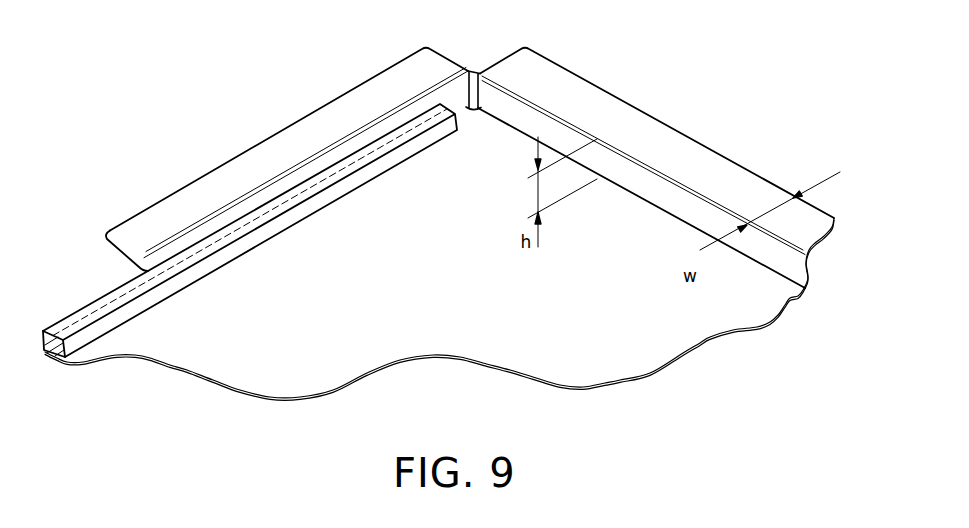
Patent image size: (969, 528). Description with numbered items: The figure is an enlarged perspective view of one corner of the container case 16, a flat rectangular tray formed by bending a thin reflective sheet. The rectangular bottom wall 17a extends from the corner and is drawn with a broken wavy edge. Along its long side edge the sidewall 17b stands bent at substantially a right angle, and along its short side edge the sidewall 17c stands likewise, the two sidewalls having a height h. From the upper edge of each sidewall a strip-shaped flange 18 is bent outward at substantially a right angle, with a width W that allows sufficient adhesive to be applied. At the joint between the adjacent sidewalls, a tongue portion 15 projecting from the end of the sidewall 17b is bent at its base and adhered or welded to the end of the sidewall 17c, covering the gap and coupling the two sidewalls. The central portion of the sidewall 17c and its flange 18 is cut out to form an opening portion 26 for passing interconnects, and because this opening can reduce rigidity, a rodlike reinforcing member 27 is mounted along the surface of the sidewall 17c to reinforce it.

The tongue portion 15 is at (480, 70).
The container case 16 is at (638, 92).
The bottom wall 17a is at (575, 341).
The sidewall on the long side 17b is at (645, 183).
The sidewall on the short side 17c is at (345, 150).
The flange 18 is at (251, 164).
The opening portion 26 is at (112, 268).
The reinforcing member 27 is at (312, 207).